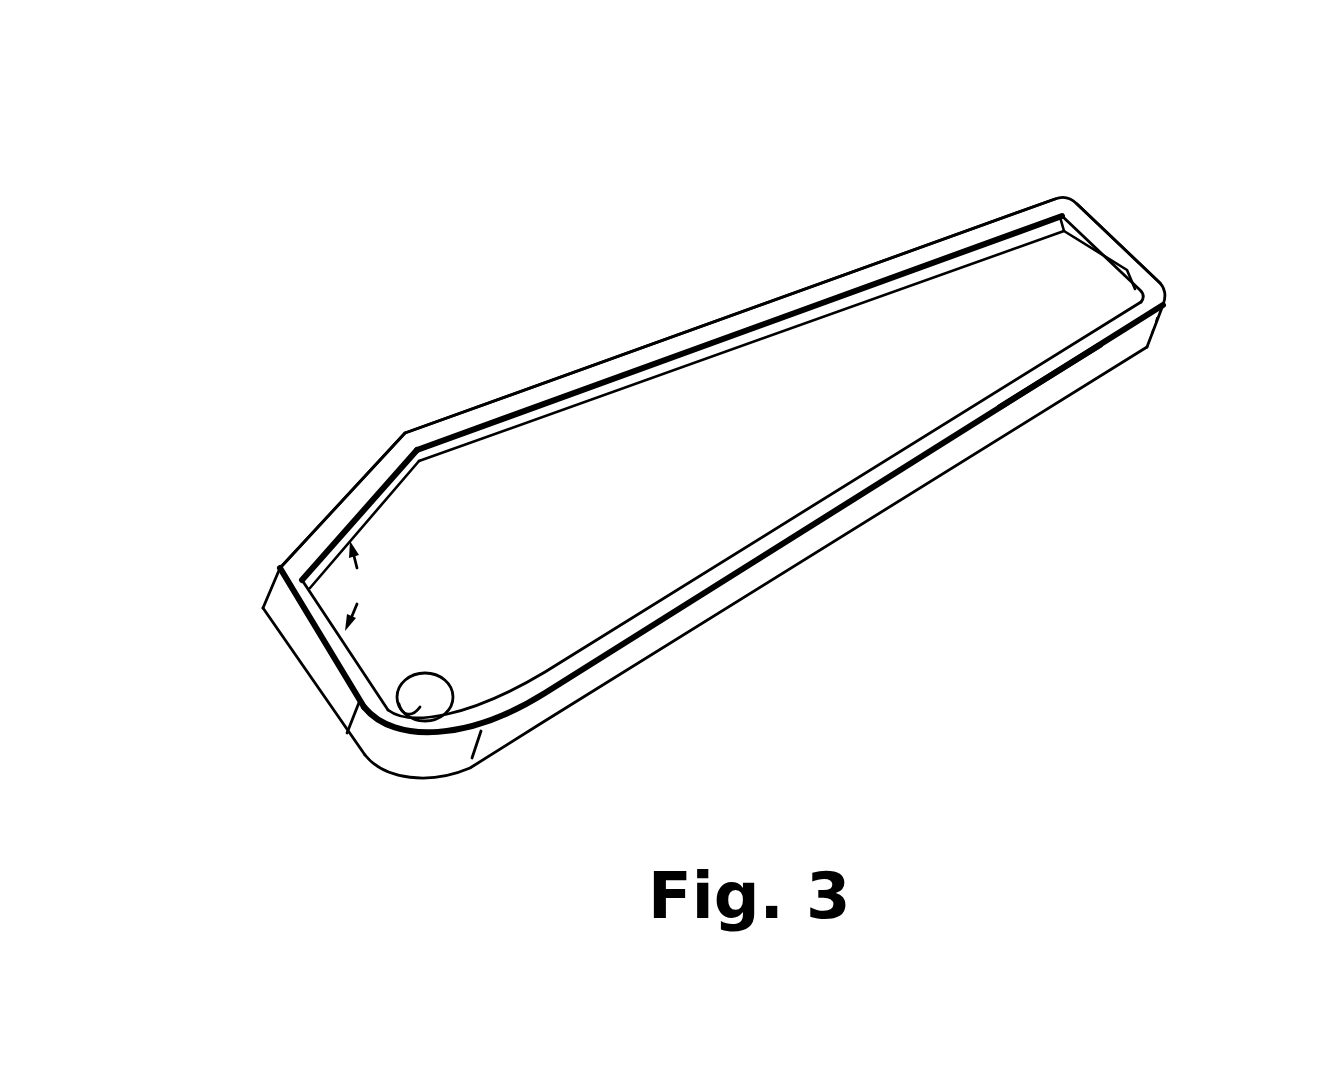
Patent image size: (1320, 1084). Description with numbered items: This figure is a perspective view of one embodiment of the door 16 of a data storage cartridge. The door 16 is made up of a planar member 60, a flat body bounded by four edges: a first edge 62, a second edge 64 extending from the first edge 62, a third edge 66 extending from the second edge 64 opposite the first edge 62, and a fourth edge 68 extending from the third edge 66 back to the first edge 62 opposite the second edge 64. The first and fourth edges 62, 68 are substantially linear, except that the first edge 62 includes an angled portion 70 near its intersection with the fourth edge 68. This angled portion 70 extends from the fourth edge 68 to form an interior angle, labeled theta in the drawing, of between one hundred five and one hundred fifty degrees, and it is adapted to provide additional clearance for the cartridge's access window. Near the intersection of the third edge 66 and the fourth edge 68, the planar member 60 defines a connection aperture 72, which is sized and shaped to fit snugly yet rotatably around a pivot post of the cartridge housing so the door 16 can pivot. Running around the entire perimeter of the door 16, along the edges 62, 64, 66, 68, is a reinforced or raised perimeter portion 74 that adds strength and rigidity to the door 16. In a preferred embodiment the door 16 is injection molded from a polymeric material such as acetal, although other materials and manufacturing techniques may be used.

The door 16 is at (719, 455).
The planar member 60 is at (833, 450).
The first edge 62 is at (823, 283).
The second edge 64 is at (1125, 235).
The third edge 66 is at (767, 568).
The fourth edge 68 is at (332, 693).
The angled portion 70 is at (378, 470).
The connection aperture 72 is at (412, 708).
The raised perimeter portion 74 is at (1088, 382).